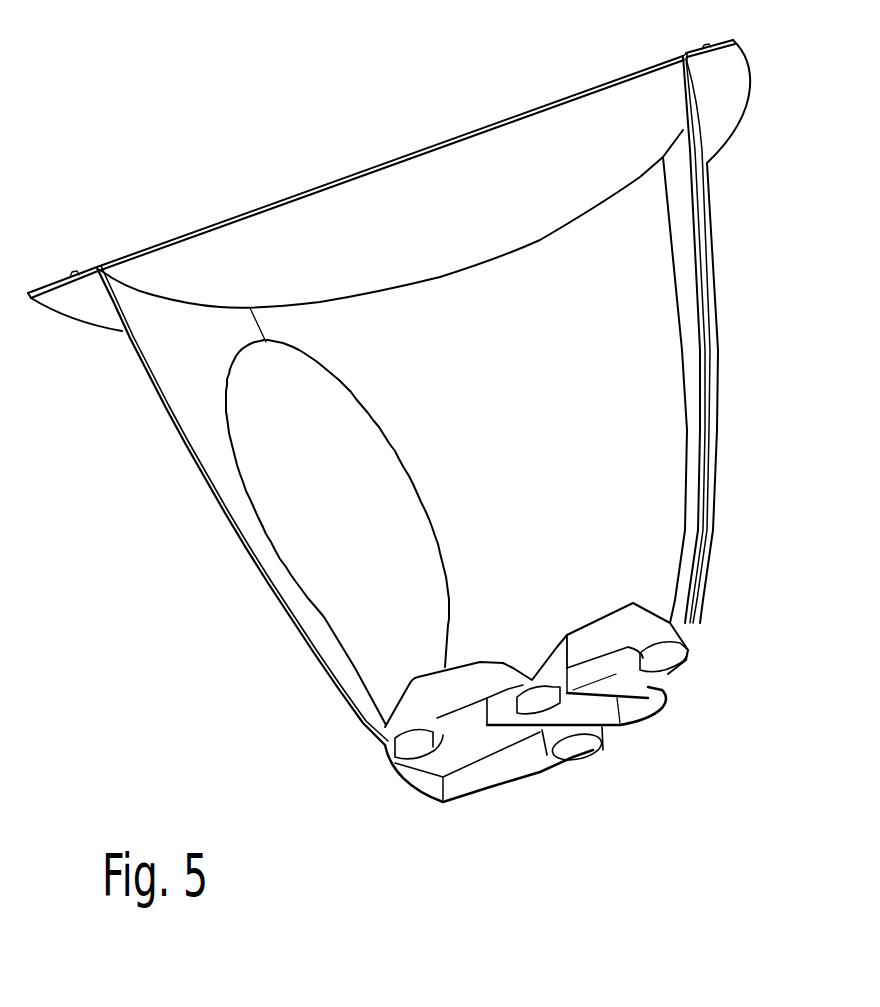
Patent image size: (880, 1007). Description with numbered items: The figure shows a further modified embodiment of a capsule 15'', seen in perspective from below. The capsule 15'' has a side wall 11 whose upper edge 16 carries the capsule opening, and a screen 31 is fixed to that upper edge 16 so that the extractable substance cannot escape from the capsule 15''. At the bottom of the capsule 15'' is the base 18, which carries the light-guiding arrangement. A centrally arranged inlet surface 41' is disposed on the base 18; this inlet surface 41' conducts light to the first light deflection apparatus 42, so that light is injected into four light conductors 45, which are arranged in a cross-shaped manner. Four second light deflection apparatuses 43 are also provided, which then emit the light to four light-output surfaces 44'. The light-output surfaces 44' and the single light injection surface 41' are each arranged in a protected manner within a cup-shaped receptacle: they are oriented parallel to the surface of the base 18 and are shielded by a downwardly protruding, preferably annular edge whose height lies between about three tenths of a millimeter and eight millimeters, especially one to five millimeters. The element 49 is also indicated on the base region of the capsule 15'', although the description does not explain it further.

The capsule 15'' is at (423, 375).
The screen 31 is at (268, 240).
The side wall 11 is at (707, 308).
The upper edge 16 is at (75, 297).
The light conductors 45 is at (450, 680).
The second light deflection apparatuses 43 is at (400, 700).
The first light deflection apparatus 42 is at (533, 677).
The mounting plate 49 is at (503, 715).
The base 18 is at (492, 808).
The light-output surfaces 44' is at (573, 770).
The inlet surface 41' is at (544, 779).